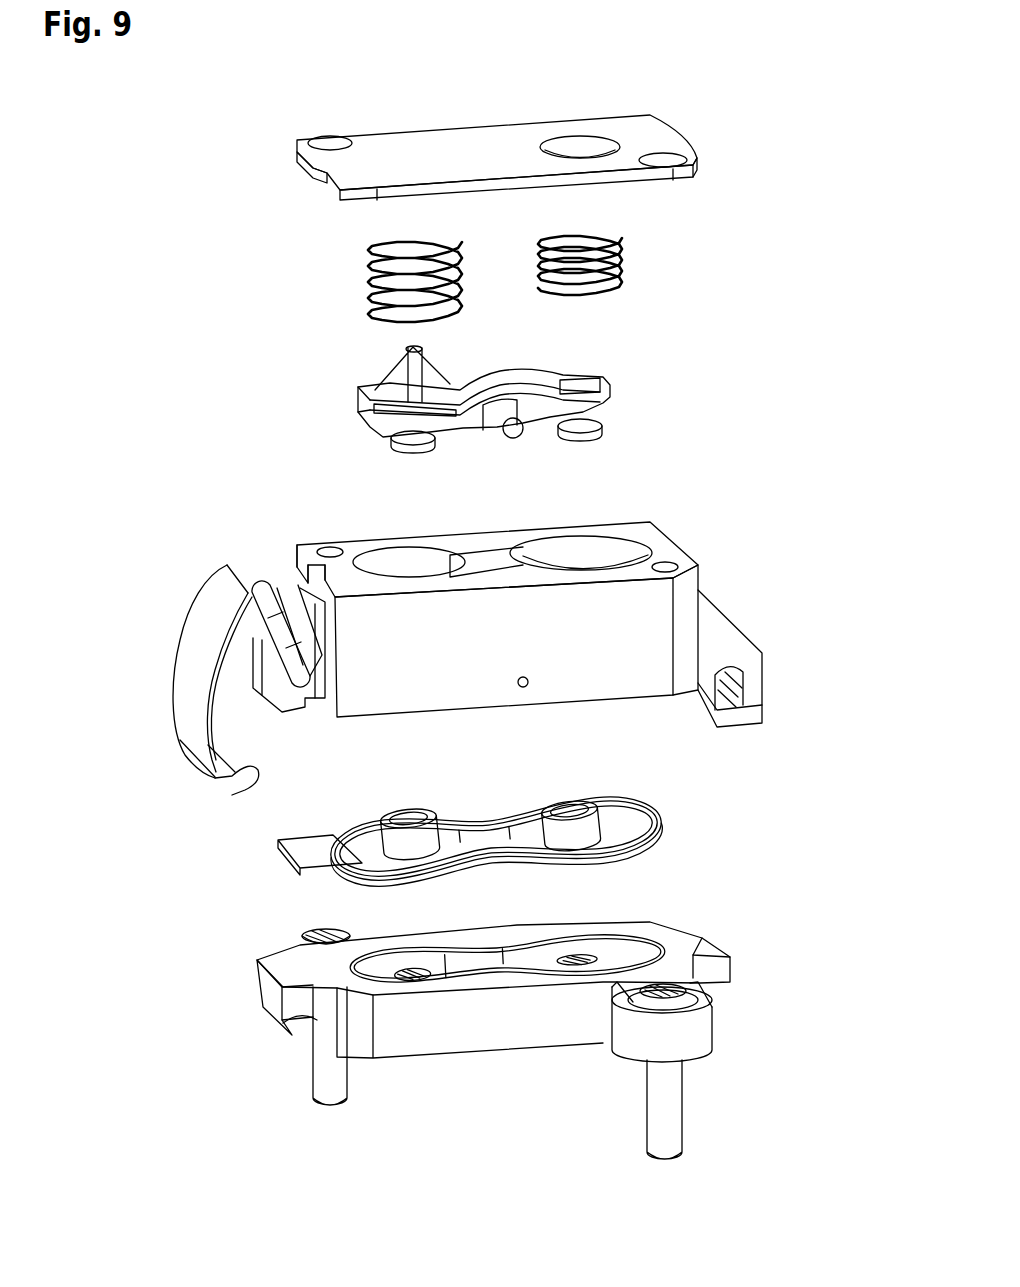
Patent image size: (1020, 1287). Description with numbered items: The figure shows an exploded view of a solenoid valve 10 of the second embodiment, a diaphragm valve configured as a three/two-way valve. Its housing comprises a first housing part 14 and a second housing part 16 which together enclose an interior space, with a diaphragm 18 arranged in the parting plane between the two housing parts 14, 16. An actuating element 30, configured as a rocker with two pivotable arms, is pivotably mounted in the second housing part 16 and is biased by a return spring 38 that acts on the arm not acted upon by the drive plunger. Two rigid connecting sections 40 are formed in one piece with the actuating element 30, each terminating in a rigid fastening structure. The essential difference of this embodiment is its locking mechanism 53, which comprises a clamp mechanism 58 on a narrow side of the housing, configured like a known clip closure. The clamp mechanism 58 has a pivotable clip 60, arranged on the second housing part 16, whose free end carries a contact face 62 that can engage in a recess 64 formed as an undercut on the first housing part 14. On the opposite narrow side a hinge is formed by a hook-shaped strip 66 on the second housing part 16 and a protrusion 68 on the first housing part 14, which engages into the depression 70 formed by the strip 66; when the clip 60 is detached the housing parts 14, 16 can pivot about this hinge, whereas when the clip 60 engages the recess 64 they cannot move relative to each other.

The solenoid valve 10 is at (130, 131).
The return spring 38 is at (367, 283).
The actuating element 30 is at (688, 370).
The connecting sections 40 is at (393, 445).
The second housing part 16 is at (581, 614).
The locking mechanism 53 is at (183, 586).
The clamp mechanism 58 is at (287, 634).
The clip 60 is at (210, 711).
The contact face 62 is at (243, 790).
The hook-shaped strip 66 is at (780, 658).
The depression 70 is at (742, 690).
The diaphragm 18 is at (730, 820).
The first housing part 14 is at (567, 1026).
The recess 64 is at (290, 1022).
The protrusion 68 is at (712, 940).